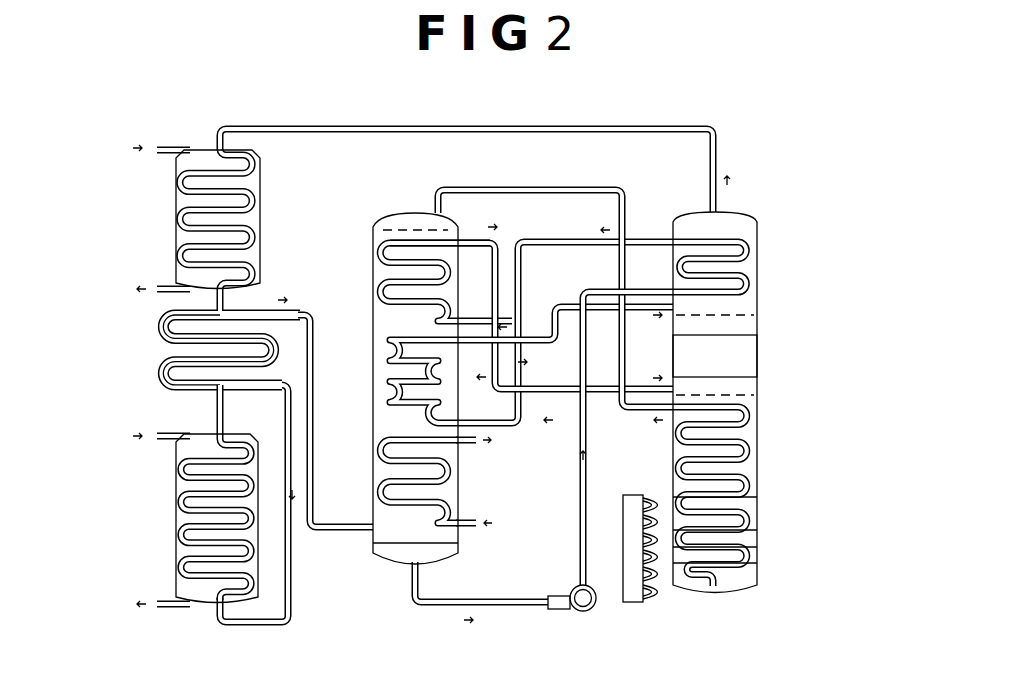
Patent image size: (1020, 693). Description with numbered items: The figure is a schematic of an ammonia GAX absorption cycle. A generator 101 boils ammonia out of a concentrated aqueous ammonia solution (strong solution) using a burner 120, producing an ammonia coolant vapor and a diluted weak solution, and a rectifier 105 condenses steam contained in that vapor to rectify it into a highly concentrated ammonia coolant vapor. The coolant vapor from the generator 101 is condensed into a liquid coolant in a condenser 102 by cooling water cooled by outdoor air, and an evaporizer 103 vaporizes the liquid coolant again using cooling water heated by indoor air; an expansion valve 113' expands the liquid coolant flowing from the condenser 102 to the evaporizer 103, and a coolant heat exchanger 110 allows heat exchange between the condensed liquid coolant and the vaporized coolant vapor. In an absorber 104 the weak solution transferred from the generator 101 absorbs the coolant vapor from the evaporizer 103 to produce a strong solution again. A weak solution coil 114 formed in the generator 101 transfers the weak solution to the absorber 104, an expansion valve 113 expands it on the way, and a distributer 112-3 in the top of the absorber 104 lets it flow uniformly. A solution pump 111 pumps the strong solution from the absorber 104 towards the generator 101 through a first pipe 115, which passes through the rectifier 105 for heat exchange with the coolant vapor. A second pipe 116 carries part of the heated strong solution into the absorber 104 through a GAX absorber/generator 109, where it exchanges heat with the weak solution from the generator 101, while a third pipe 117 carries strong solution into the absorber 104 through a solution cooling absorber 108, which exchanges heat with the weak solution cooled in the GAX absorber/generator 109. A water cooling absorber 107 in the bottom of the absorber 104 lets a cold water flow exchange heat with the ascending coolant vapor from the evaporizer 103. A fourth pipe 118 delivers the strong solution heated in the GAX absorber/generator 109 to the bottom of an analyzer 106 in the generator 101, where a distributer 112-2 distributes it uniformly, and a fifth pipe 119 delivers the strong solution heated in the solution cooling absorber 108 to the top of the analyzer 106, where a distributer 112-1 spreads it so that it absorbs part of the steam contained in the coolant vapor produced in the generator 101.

The generator 101 is at (758, 562).
The condenser 102 is at (176, 222).
The evaporizer 103 is at (176, 533).
The absorber 104 is at (393, 213).
The rectifier 105 is at (748, 251).
The analyzer 106 is at (742, 356).
The water cooling absorber 107 is at (388, 483).
The solution cooling absorber 108 is at (386, 378).
The GAX absorber/generator 109 is at (386, 288).
The coolant heat exchanger 110 is at (160, 362).
The solution pump 111 is at (578, 612).
The distributer 112-1 is at (745, 313).
The distributer 112-2 is at (750, 398).
The distributer 112-3 is at (407, 230).
The expansion valve 113 is at (555, 274).
The expansion valve 113' is at (302, 514).
The weak solution coil 114 is at (752, 515).
The first pipe 115 is at (582, 548).
The second pipe 116 is at (466, 318).
The third pipe 117 is at (494, 481).
The fourth pipe 118 is at (544, 393).
The fifth pipe 119 is at (551, 330).
The burner 120 is at (628, 604).